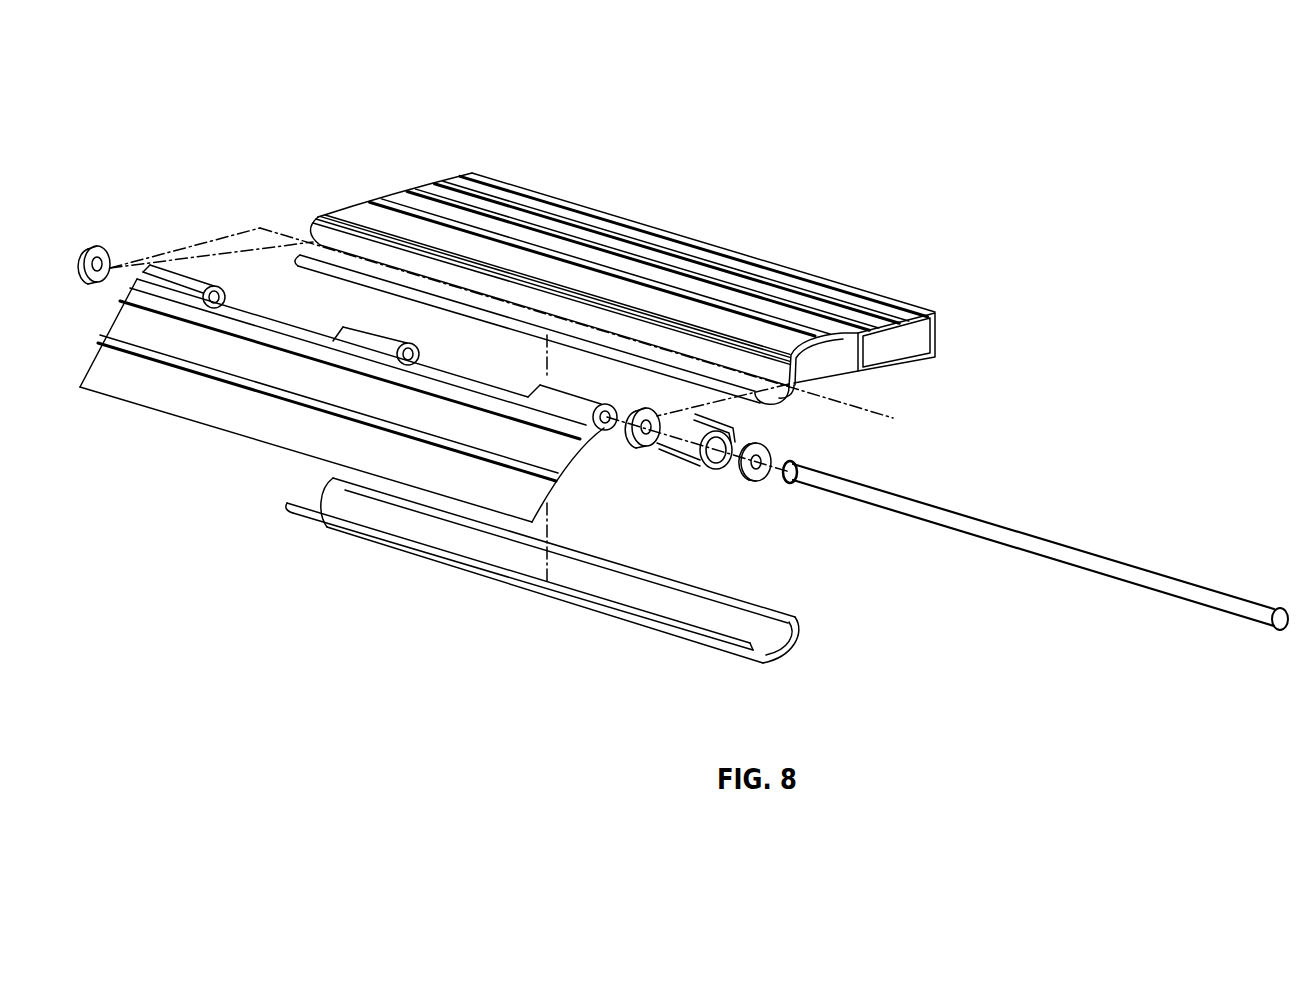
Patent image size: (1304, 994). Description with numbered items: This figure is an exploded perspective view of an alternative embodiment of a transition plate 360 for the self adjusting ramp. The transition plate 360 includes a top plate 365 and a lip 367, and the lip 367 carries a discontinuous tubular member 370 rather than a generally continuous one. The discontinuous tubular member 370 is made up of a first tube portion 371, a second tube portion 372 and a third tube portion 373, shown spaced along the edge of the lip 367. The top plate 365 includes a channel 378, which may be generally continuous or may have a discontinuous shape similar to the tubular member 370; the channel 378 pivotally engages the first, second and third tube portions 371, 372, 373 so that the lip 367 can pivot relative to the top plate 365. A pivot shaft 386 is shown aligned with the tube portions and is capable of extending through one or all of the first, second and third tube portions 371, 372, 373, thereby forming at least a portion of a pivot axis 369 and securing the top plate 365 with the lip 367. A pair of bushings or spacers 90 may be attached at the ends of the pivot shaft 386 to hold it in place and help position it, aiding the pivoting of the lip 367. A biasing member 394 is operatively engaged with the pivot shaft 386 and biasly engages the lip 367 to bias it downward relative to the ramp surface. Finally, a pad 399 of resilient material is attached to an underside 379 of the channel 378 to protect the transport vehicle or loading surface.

The transition plate 360 is at (846, 134).
The bushing or spacer 90 is at (88, 244).
The top plate 365 is at (853, 294).
The lip 367 is at (223, 410).
The pivot axis 369 is at (880, 413).
The discontinuous tubular member 370 is at (160, 250).
The first tube portion 371 is at (201, 282).
The second tube portion 372 is at (422, 343).
The third tube portion 373 is at (553, 384).
The channel 378 is at (794, 392).
The underside of the channel 379 is at (771, 407).
The pivot shaft 386 is at (973, 527).
The biasing member 394 is at (713, 470).
The pad 399 is at (785, 653).